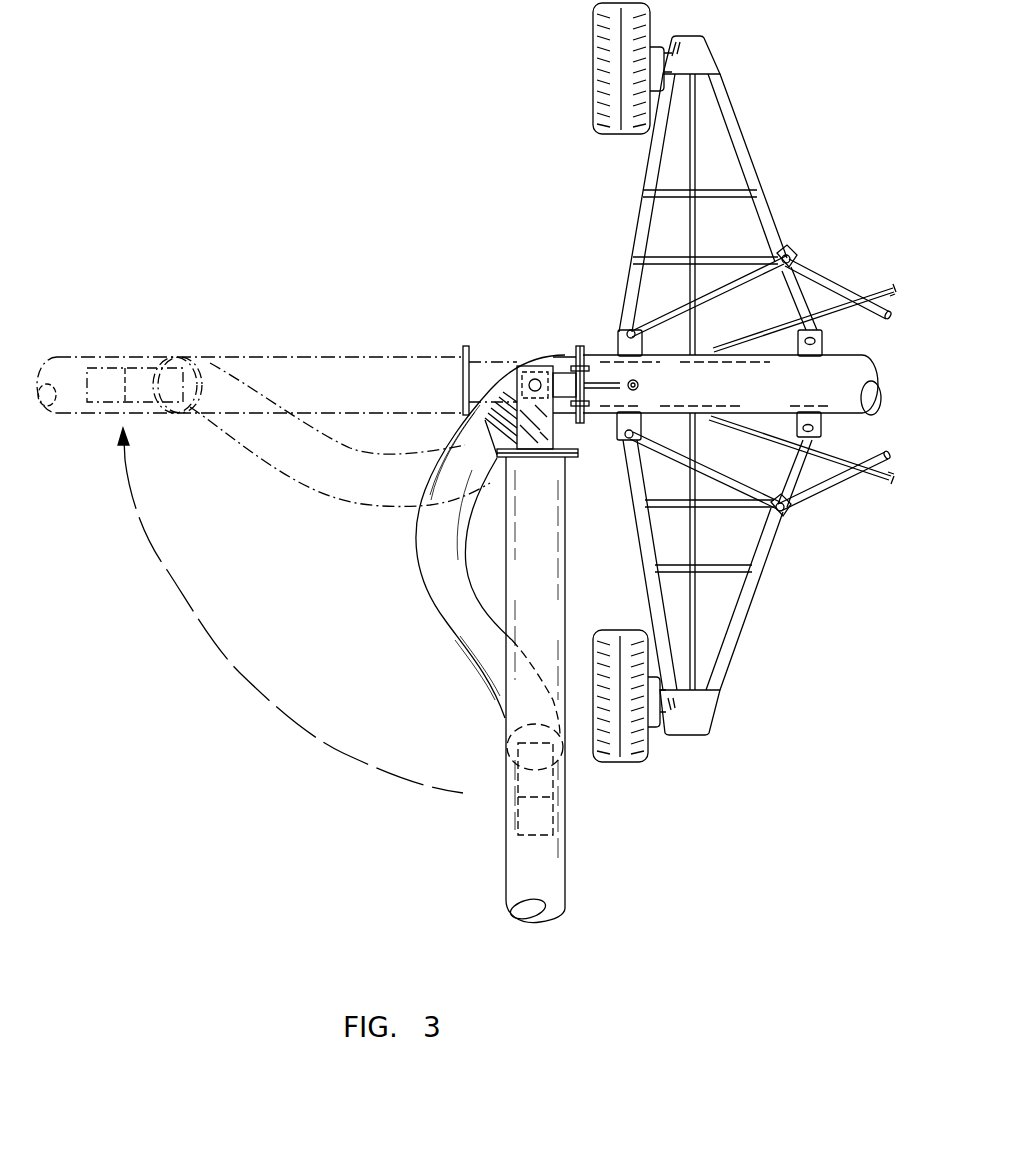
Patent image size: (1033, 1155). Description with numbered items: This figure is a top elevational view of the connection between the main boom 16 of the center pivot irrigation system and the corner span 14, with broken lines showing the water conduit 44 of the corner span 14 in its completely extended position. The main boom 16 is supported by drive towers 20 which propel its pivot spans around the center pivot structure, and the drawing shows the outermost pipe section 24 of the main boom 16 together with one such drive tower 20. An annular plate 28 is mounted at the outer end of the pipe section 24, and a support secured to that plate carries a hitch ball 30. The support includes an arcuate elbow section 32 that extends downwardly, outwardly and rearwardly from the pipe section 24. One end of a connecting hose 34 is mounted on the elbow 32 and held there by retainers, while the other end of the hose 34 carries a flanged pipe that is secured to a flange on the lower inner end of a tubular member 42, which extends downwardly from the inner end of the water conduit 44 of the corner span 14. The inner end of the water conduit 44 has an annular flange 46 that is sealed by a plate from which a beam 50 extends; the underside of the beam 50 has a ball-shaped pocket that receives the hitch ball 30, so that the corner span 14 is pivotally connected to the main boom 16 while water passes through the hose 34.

The corner span 14 is at (484, 826).
The main boom 16 is at (852, 277).
The drive tower 20 is at (747, 596).
The outermost pipe section 24 is at (798, 395).
The annular plate 28 is at (585, 360).
The hitch ball 30 is at (530, 360).
The elbow section 32 is at (467, 417).
The connecting hose 34 is at (447, 598).
The tubular member 42 is at (537, 787).
The water conduit 44 is at (327, 360).
The annular flange 46 is at (570, 458).
The beam 50 is at (563, 360).